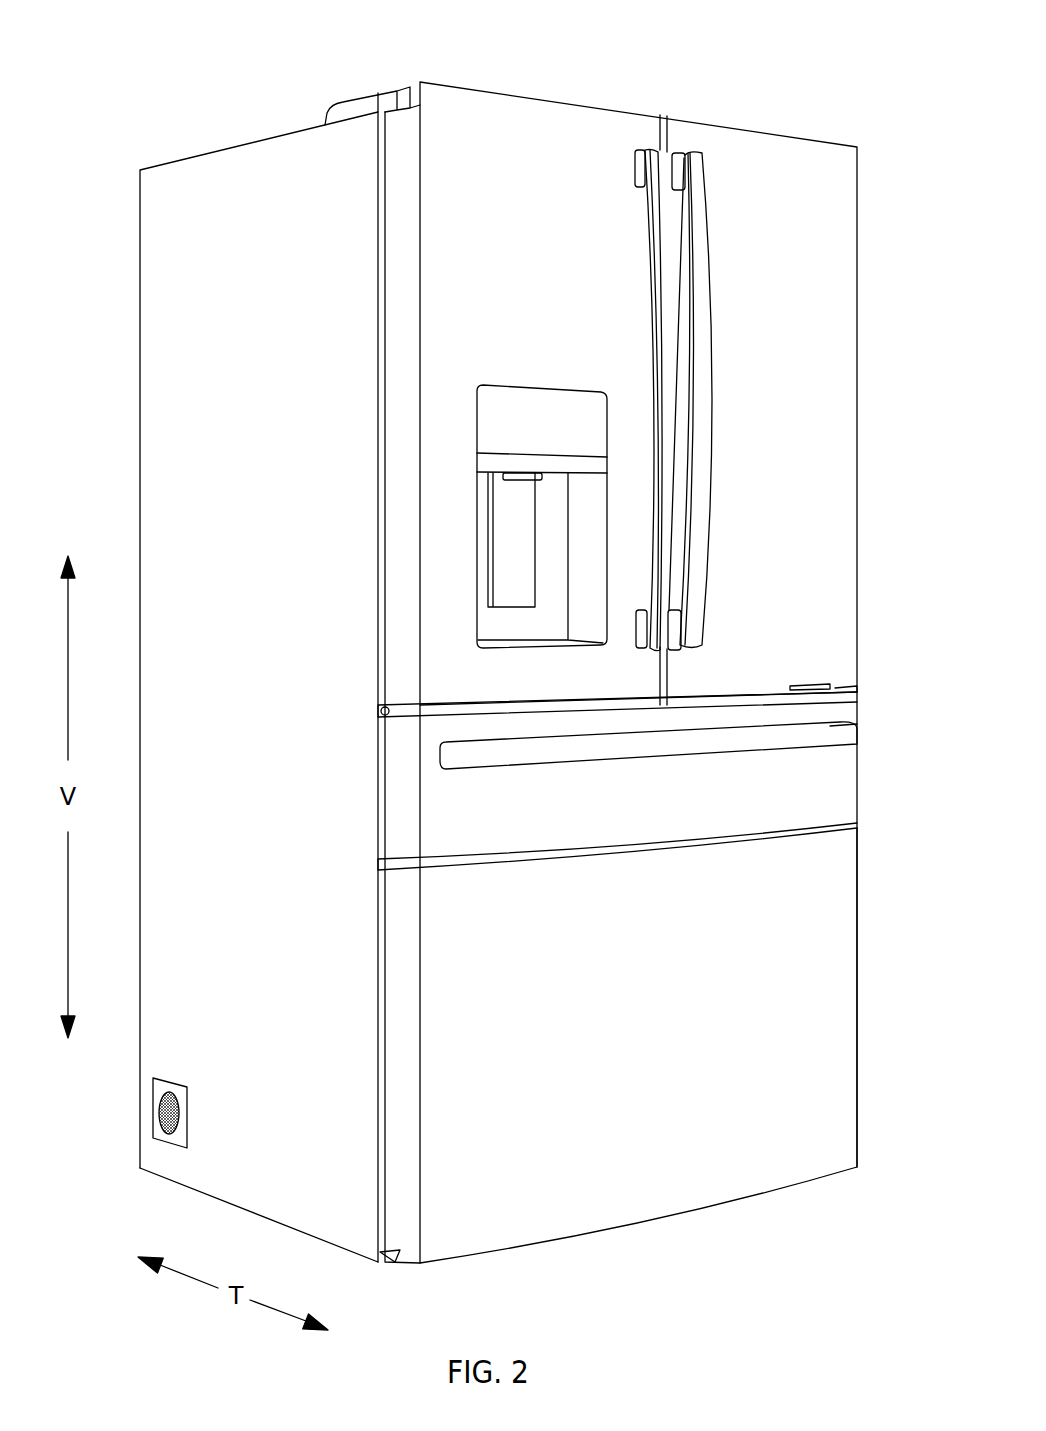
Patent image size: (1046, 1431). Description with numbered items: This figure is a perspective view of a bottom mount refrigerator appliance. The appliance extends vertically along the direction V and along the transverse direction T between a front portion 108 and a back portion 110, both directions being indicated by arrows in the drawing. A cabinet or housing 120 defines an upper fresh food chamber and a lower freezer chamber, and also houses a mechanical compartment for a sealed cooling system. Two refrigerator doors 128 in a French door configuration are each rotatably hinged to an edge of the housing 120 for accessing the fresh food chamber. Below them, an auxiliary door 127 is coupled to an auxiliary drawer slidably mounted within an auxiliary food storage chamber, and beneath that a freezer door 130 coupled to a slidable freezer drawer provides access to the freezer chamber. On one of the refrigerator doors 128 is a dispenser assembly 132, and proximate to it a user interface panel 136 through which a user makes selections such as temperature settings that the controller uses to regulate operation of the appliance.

The front portion 108 is at (668, 1217).
The back portion 110 is at (135, 1062).
The cabinet or housing 120 is at (192, 263).
The auxiliary door 127 is at (832, 782).
The refrigerator doors 128 is at (458, 108).
The freezer door 130 is at (832, 959).
The dispenser assembly 132 is at (485, 558).
The user interface panel 136 is at (523, 402).